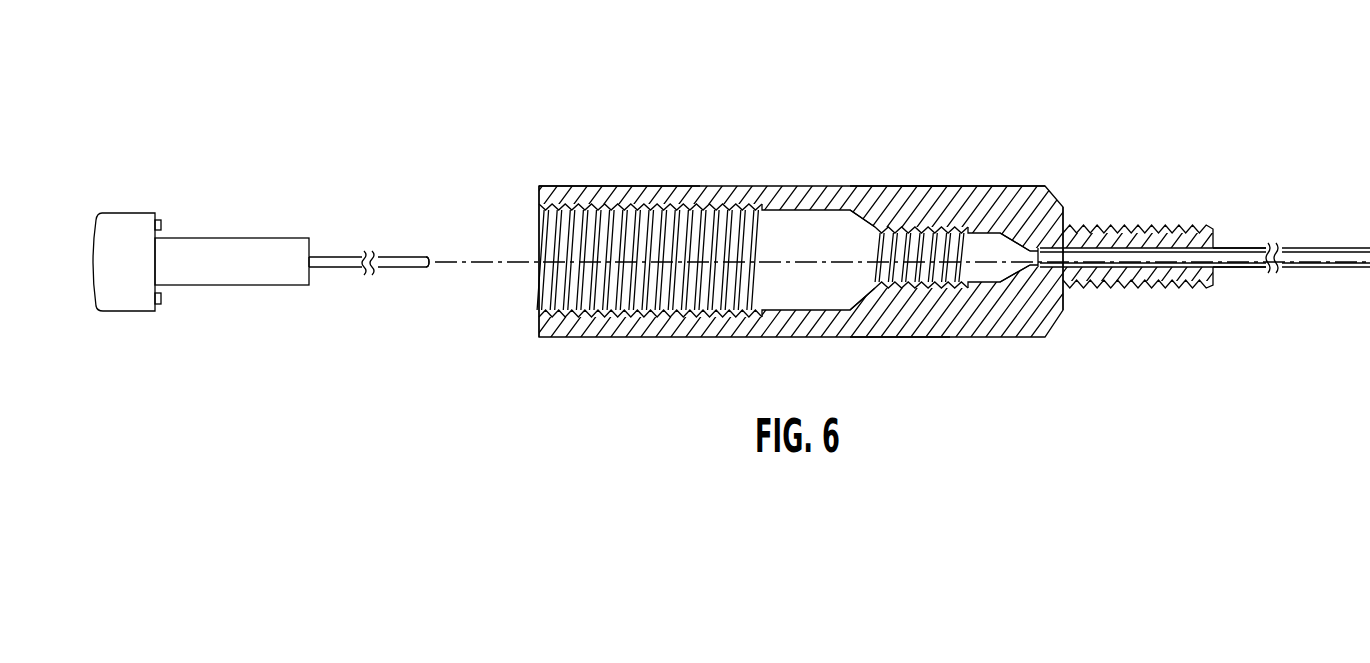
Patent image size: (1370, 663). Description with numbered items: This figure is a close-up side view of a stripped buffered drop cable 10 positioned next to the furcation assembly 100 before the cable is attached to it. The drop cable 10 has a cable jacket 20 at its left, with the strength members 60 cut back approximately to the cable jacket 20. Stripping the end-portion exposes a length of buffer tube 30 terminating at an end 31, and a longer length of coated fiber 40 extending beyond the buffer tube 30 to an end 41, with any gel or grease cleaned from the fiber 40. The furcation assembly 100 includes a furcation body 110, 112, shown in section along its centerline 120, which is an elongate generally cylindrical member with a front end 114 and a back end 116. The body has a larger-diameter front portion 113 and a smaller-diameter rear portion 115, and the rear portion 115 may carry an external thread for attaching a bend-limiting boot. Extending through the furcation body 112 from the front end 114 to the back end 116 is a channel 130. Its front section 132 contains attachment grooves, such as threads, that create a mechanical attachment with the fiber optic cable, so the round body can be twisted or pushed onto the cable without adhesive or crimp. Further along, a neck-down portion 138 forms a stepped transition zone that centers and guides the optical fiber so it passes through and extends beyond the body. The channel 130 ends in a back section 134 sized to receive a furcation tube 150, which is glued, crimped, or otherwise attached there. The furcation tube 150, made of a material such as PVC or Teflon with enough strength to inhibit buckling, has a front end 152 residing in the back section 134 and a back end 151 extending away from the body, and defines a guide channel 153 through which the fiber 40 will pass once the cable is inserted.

The buffered drop cable 10 is at (138, 205).
The cable jacket 20 is at (133, 293).
The buffer tube 30 is at (242, 248).
The end of buffer tube 31 is at (310, 274).
The fiber 40 is at (329, 256).
The end of fiber 41 is at (432, 265).
The strength members 60 is at (161, 227).
The furcation assembly 100 is at (678, 67).
The fitting body 110 is at (799, 265).
The furcation body 112 is at (923, 188).
The front portion 113 is at (565, 168).
The front end 114 is at (538, 197).
The rear portion 115 is at (895, 170).
The back end 116 is at (1088, 289).
The centerline 120 is at (1369, 235).
The channel 130 is at (700, 328).
The front section 132 is at (633, 222).
The back section 134 is at (888, 230).
The neck-down portion 138 is at (866, 215).
The furcation tube 150 is at (1093, 226).
The back end of furcation tube 151 is at (1213, 272).
The front end of furcation tube 152 is at (1030, 268).
The guide channel 153 is at (1127, 264).